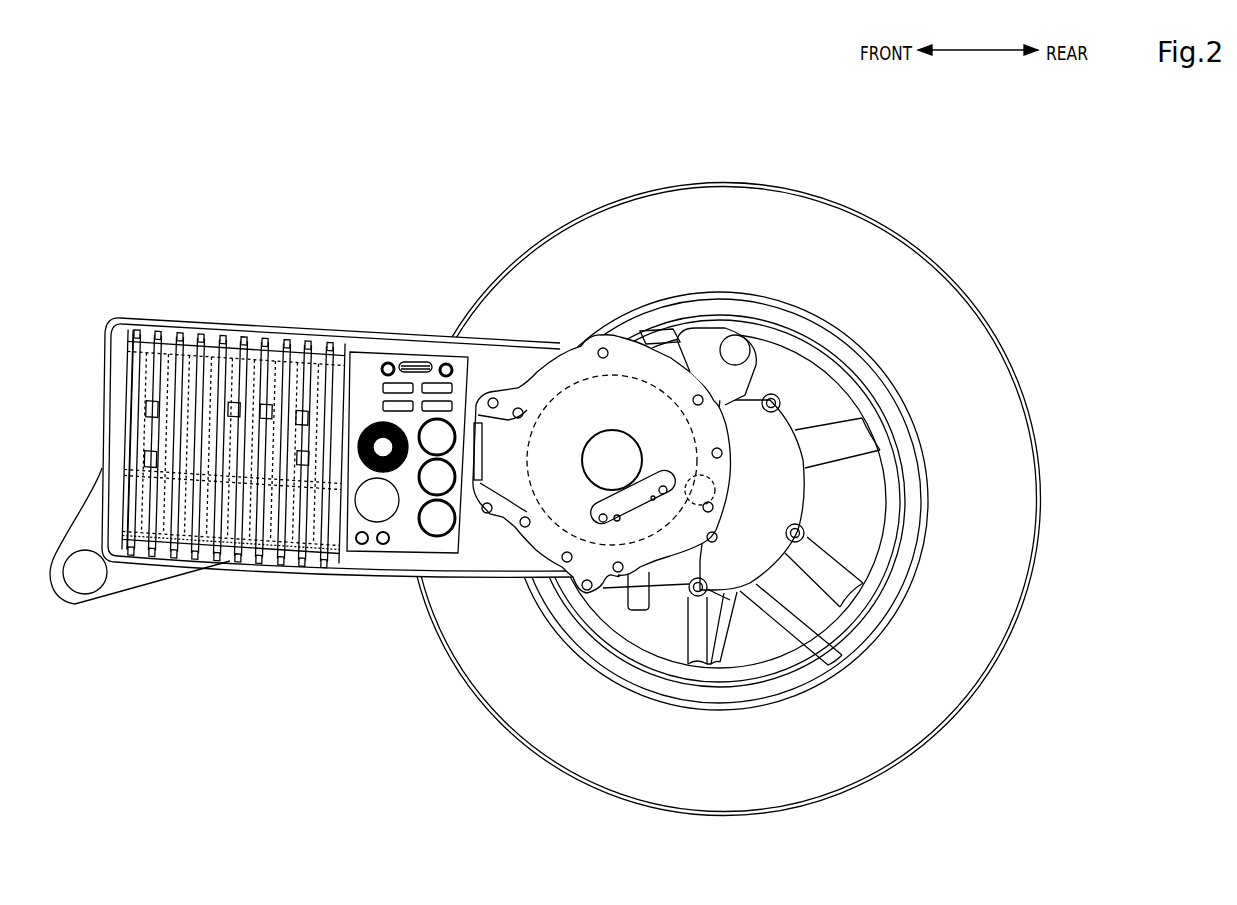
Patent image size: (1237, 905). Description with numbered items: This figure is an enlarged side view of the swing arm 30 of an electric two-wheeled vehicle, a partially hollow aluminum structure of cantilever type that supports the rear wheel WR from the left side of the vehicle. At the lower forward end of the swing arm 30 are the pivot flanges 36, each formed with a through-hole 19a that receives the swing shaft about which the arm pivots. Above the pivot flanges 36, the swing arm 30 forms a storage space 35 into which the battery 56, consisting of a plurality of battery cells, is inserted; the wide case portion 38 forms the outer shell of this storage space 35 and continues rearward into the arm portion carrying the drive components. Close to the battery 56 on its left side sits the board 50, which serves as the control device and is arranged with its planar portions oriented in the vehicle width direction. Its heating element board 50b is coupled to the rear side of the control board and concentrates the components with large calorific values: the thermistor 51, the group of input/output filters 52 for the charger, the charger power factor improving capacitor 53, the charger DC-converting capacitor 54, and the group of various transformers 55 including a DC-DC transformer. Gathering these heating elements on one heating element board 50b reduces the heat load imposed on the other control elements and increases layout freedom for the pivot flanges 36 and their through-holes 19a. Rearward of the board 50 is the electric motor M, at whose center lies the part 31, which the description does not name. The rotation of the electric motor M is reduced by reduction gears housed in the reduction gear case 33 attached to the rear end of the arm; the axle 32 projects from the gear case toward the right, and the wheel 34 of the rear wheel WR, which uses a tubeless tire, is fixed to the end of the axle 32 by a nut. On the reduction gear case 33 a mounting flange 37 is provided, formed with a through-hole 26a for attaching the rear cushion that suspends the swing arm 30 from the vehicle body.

The swing arm 30 is at (305, 466).
The wide case portion 38 is at (153, 318).
The storage space 35 is at (257, 330).
The battery 56 is at (240, 552).
The pivot flange 36 is at (133, 580).
The through-hole 19a is at (78, 584).
The board 50 is at (382, 489).
The charger power factor improving capacitor (PFC circuit) 53 is at (365, 440).
The group of input/output filters for a charger 52 is at (381, 380).
The thermistor 51 is at (420, 365).
The charger DC-converting capacitor (AC-DC transformer) 54 is at (375, 505).
The group of various transformers 55 is at (434, 540).
The heating element board 50b is at (395, 546).
The electric motor M is at (704, 474).
The motor output shaft 31 is at (612, 455).
The mounting flange 37 is at (787, 243).
The through-hole 26a is at (742, 347).
The axle 32 is at (727, 500).
The reduction gear case 33 is at (793, 497).
The wheel 34 is at (857, 597).
The rear wheel WR is at (742, 515).